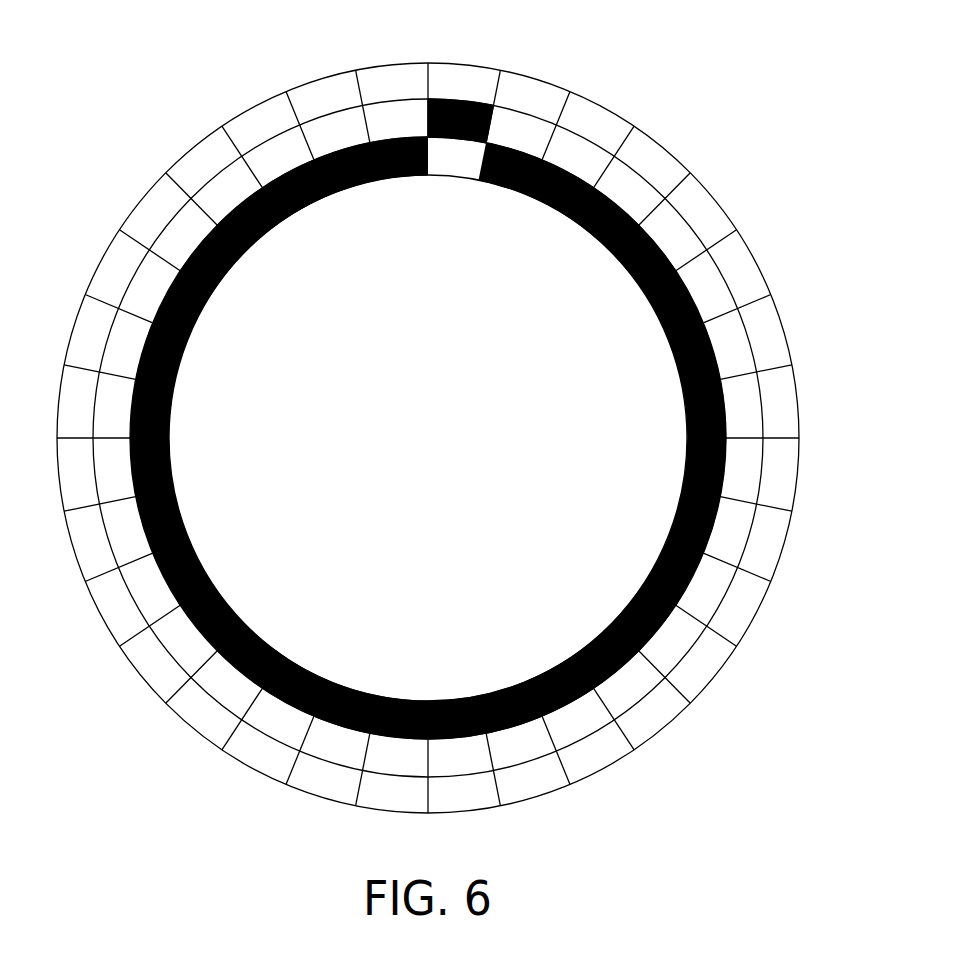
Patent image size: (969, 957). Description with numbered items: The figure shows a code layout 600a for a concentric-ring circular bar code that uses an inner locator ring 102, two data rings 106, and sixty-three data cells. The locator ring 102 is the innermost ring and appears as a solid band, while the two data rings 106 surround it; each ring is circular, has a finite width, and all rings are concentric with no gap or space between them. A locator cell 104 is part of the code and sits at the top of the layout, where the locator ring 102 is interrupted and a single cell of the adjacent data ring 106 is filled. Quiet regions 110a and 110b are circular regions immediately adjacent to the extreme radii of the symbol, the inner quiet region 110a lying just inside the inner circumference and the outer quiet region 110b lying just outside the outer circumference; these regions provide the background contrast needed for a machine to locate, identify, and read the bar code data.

The code layout 600a is at (159, 86).
The data ring 106 is at (682, 232).
The locator cell 104 is at (452, 168).
The locator ring 102 is at (618, 260).
The inner quiet region 110a is at (404, 672).
The outer quiet region 110b is at (723, 712).